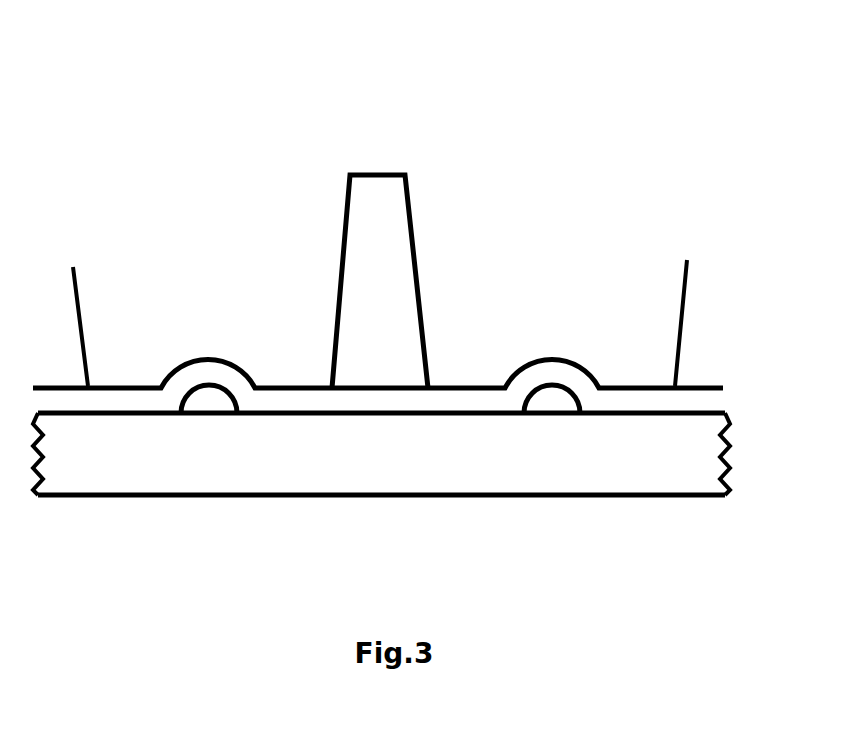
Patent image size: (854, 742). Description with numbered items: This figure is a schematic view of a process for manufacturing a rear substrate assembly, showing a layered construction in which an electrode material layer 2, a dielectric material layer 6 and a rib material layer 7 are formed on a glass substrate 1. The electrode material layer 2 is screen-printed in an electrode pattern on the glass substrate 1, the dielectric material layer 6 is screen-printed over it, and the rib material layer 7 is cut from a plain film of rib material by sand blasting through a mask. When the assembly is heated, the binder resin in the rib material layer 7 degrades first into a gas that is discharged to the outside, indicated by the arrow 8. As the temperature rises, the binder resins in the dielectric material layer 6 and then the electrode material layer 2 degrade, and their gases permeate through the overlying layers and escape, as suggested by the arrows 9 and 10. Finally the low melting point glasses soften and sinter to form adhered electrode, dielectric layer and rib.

The glass substrate 1 is at (692, 450).
The electrode material layer 2 is at (210, 408).
The dielectric material layer 6 is at (617, 403).
The rib material layer 7 is at (370, 200).
The discharge of degraded binder resin gas 8 is at (344, 338).
The light path 9 is at (466, 400).
The light path 10 is at (201, 402).